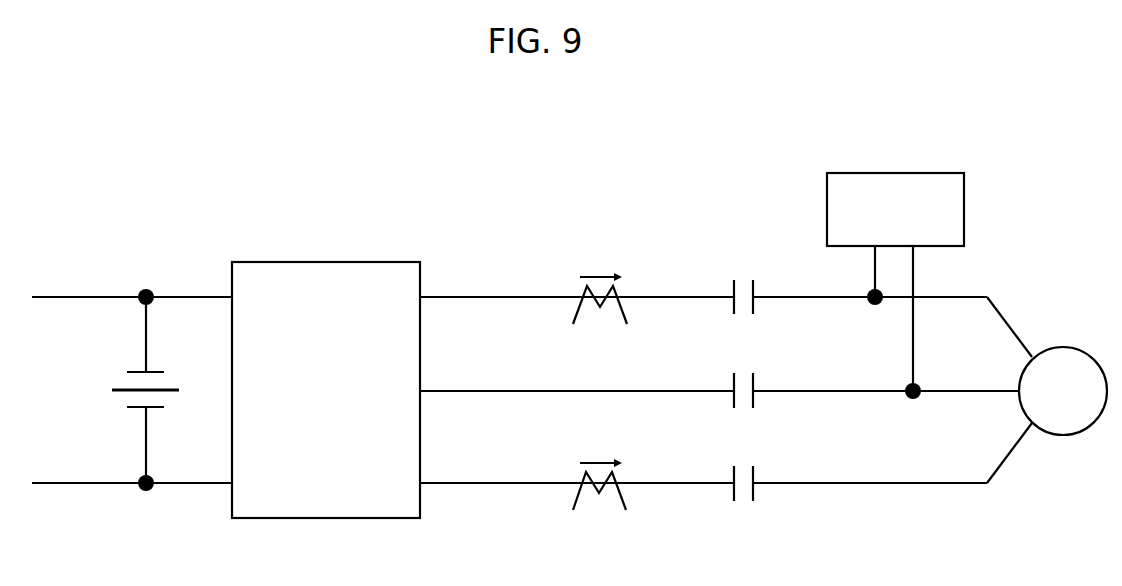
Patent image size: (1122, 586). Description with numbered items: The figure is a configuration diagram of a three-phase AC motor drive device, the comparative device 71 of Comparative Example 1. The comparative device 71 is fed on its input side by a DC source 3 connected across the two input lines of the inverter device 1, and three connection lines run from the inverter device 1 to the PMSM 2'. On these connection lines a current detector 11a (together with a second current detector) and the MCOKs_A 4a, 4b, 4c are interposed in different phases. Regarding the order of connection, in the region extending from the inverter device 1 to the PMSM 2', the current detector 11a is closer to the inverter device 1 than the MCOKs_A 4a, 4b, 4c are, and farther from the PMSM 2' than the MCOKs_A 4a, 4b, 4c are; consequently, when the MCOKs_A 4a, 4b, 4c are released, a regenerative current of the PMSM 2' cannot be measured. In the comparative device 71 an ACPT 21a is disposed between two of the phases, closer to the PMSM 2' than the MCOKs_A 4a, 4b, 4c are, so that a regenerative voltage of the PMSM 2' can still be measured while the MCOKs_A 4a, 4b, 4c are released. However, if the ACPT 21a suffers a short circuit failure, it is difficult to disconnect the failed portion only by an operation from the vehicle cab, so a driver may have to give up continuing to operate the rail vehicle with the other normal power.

The comparative device 71 is at (525, 151).
The DC power supply 3 is at (104, 389).
The inverter device 1 is at (318, 403).
The current detector 11a is at (612, 275).
The MCOK_A 4a is at (755, 313).
The MCOK_A 4b is at (755, 407).
The MCOK_A 4c is at (755, 500).
The ACPT 21a is at (946, 221).
The PMSM 2' is at (1063, 391).